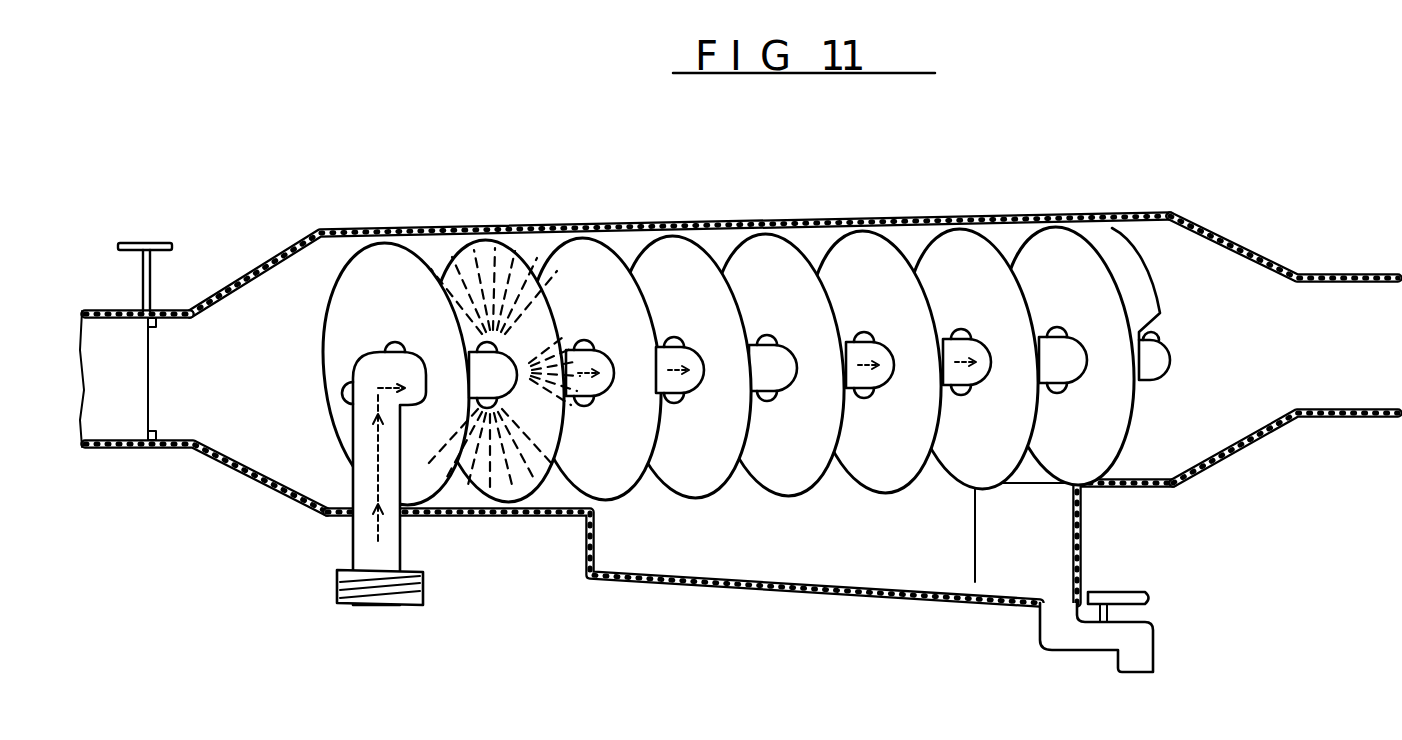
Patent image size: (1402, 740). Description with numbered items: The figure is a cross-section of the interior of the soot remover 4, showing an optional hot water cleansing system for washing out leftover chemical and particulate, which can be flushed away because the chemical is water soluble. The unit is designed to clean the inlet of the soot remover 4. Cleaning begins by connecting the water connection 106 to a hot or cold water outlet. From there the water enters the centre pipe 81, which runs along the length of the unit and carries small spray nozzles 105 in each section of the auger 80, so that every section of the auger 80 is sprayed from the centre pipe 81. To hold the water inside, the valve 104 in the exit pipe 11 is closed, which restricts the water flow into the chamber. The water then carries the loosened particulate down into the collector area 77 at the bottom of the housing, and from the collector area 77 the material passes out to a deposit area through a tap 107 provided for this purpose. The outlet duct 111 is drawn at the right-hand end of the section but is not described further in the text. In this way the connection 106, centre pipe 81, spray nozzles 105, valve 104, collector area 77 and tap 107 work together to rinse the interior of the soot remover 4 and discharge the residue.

The soot remover 4 is at (380, 232).
The exit pipe 11 is at (237, 467).
The collector area 77 is at (720, 588).
The auger 80 is at (1045, 230).
The centre pipe 81 is at (772, 348).
The valve 104 is at (163, 243).
The spray nozzles 105 is at (960, 338).
The water connection 106 is at (427, 583).
The tap 107 is at (1040, 636).
The outlet duct 111 is at (1313, 416).